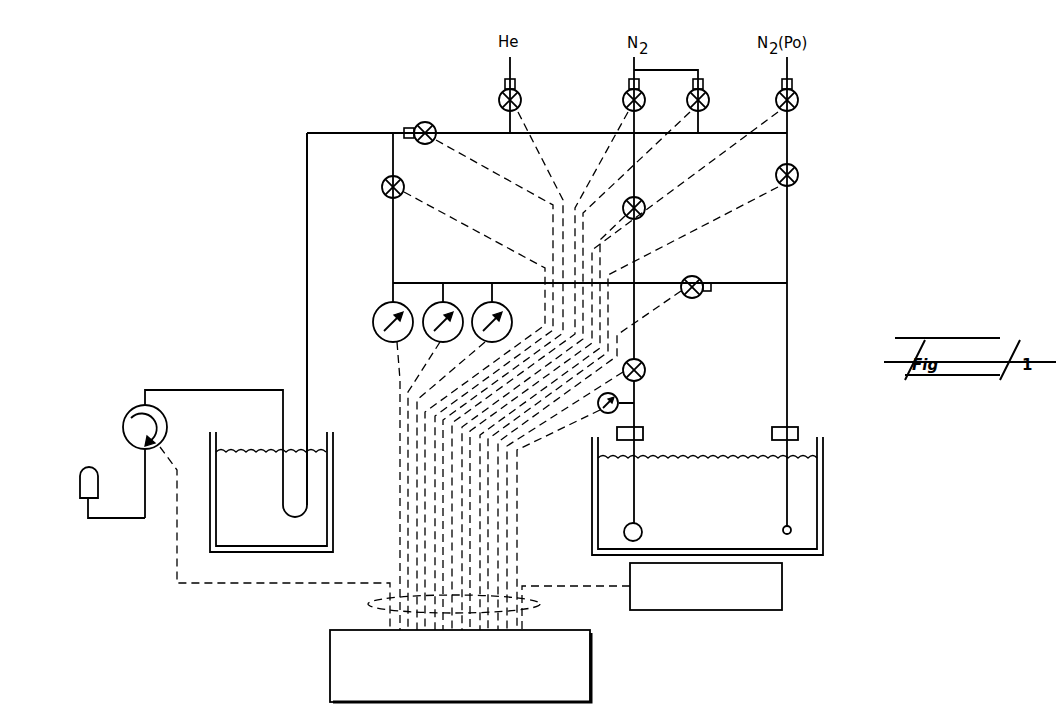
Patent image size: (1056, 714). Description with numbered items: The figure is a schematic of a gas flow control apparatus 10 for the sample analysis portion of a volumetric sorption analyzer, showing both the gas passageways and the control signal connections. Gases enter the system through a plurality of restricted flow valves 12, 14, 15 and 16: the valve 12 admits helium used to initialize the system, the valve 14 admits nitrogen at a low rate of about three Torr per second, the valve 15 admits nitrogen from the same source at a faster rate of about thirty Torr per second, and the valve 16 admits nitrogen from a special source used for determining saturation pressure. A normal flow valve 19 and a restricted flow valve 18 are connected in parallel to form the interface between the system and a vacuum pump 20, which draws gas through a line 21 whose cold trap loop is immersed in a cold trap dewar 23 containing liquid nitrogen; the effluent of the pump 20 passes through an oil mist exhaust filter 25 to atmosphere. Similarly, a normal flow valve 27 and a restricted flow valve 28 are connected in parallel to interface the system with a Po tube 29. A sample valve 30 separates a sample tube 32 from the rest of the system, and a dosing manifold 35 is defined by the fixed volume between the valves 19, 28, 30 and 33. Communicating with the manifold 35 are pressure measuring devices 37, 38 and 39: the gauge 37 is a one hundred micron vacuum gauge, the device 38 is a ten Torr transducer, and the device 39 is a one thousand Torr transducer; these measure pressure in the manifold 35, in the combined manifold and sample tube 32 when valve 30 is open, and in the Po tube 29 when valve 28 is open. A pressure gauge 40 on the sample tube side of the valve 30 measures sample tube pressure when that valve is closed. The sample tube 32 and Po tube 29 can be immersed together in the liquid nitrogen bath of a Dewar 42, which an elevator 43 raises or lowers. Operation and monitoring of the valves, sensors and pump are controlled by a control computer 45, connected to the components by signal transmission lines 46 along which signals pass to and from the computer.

The gas flow control apparatus 10 is at (918, 250).
The restricted flow valve 12 is at (520, 93).
The restricted flow valve 14 is at (622, 102).
The restricted flow valve 15 is at (706, 93).
The restricted flow valve 16 is at (799, 100).
The restricted flow valve 18 is at (430, 122).
The normal flow valve 19 is at (382, 187).
The vacuum pump 20 is at (123, 414).
The line 21 is at (307, 240).
The cold trap dewar 23 is at (208, 466).
The oil mist exhaust filter 25 is at (80, 488).
The normal flow valve 27 is at (799, 173).
The restricted flow valve 28 is at (698, 275).
The Po tube 29 is at (782, 532).
The sample valve 30 is at (645, 370).
The sample tube 32 is at (638, 524).
The valve 33 is at (645, 207).
The dosing manifold 35 is at (468, 283).
The vacuum gauge 37 is at (386, 341).
The pressure transducer 38 is at (433, 309).
The pressure transducer 39 is at (483, 309).
The pressure gauge 40 is at (600, 412).
The Dewar 42 is at (823, 500).
The elevator 43 is at (782, 597).
The control computer 45 is at (330, 655).
The signal transmission lines 46 is at (540, 602).